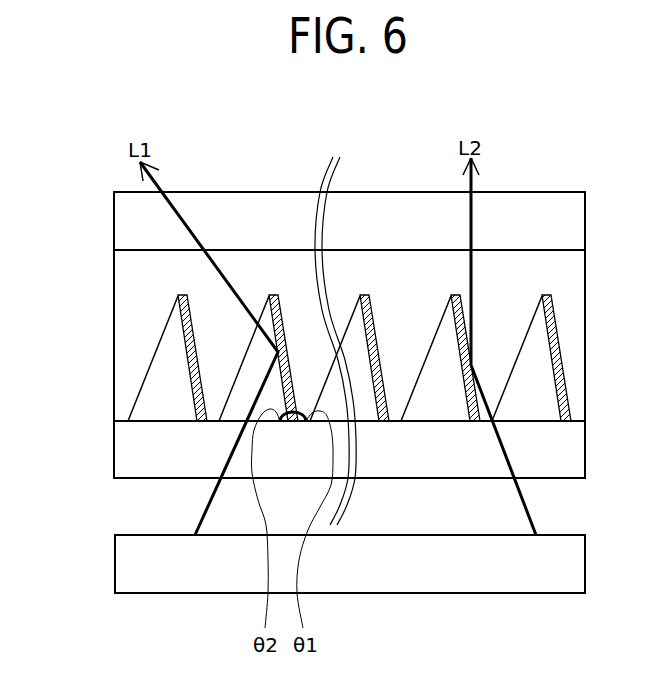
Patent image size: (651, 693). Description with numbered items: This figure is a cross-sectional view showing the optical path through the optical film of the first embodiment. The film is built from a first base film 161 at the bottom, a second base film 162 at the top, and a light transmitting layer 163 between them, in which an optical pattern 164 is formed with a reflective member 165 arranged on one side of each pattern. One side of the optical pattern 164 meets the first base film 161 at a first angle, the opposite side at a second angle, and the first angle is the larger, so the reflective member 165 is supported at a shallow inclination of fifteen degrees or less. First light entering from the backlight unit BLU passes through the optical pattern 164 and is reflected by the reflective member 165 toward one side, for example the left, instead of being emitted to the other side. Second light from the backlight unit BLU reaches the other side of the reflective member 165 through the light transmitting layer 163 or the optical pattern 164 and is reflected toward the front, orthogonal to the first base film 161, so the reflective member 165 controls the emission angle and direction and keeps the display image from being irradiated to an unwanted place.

The first base film 161 is at (130, 443).
The second base film 162 is at (130, 223).
The light transmitting layer 163 is at (130, 323).
The optical pattern 164 is at (161, 402).
The reflective member 165 is at (191, 359).
The backlight unit BLU is at (130, 562).